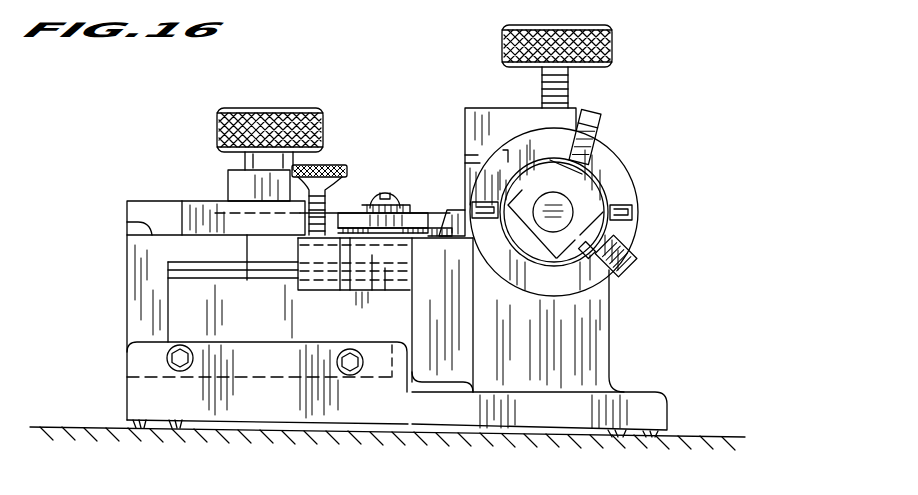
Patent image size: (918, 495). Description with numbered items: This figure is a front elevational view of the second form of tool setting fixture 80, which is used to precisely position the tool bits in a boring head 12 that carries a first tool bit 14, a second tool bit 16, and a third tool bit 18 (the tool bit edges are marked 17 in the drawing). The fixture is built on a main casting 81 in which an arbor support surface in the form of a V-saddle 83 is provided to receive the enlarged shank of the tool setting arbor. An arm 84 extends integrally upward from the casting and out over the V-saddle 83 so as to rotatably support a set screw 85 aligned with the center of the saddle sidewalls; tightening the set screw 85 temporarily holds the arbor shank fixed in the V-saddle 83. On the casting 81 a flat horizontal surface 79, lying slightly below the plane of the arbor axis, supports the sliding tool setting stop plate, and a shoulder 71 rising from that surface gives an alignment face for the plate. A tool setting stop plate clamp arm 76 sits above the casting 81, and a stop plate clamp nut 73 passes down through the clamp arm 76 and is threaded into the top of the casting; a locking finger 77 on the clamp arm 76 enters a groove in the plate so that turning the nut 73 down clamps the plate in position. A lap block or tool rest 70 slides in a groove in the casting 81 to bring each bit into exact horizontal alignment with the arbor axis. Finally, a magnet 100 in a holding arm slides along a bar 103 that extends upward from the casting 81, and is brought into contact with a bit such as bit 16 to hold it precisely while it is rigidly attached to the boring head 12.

The boring head 12 is at (630, 192).
The first tool bit 14 is at (636, 258).
The second tool bit 16 is at (464, 208).
The cutting tool 17 is at (603, 122).
The third tool bit 18 is at (605, 130).
The lap block or tool rest 70 is at (263, 252).
The shoulder 71 is at (127, 210).
The stop plate clamp nut 73 is at (270, 110).
The tool setting stop plate clamp arm 76 is at (226, 168).
The locking finger 77 is at (228, 187).
The flat horizontal surface 79 is at (127, 222).
The tool setting fixture 80 is at (138, 195).
The main casting 81 is at (627, 405).
The V-saddle 83 is at (587, 327).
The arm 84 is at (482, 110).
The set screw 85 is at (578, 88).
The magnet 100 is at (446, 240).
The bar 103 is at (192, 322).